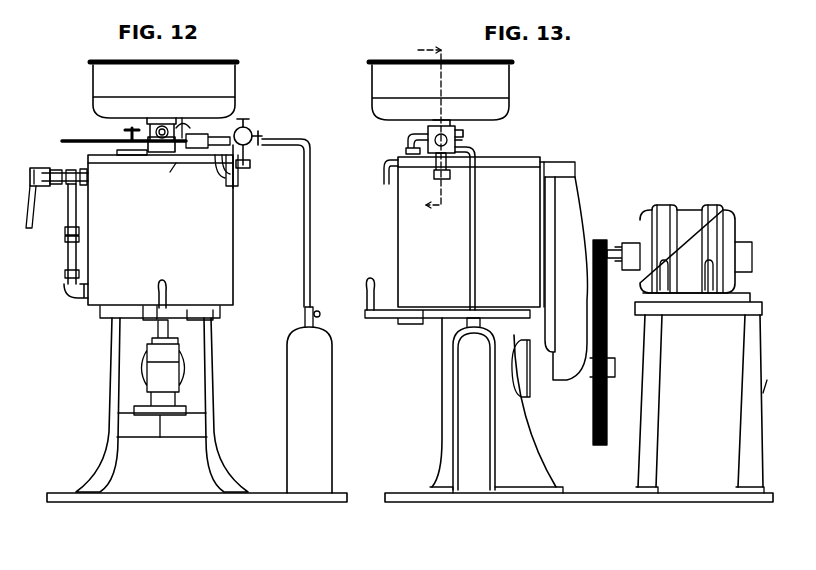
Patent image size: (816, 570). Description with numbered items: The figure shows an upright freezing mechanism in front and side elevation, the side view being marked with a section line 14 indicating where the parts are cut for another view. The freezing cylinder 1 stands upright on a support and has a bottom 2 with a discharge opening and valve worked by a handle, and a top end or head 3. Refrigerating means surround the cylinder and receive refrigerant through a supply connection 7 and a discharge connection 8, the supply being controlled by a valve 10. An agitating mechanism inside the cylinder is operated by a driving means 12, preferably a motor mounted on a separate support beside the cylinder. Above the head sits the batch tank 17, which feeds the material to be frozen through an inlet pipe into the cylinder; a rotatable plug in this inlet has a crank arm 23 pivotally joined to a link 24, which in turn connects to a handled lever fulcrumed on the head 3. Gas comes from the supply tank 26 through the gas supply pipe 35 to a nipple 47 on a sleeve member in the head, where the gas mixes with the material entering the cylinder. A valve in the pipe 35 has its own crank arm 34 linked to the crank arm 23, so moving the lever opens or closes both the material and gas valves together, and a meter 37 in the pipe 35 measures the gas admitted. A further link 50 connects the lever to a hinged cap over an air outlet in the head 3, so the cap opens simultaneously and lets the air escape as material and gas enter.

In FIG. 12, the freezing cylinder 1 is at (168, 232).
In FIG. 13, the freezing cylinder 1 is at (503, 222).
In FIG. 12, the bottom 2 is at (168, 297).
In FIG. 13, the bottom 2 is at (428, 345).
In FIG. 12, the top end or head 3 is at (146, 167).
In FIG. 13, the top end or head 3 is at (402, 158).
In FIG. 12, the supply connection 7 is at (89, 292).
In FIG. 12, the discharge connection 8 is at (89, 180).
In FIG. 12, the valve 10 is at (48, 170).
In FIG. 13, the driving means 12 is at (592, 448).
In FIG. 13, the section line 14 is at (437, 130).
In FIG. 12, the batch tank 17 is at (238, 80).
In FIG. 13, the batch tank 17 is at (372, 87).
In FIG. 12, the crank arm 23 is at (161, 119).
In FIG. 13, the crank arm 23 is at (427, 125).
In FIG. 12, the link 24 is at (233, 187).
In FIG. 13, the link 24 is at (371, 174).
In FIG. 12, the supply tank 26 is at (322, 448).
In FIG. 13, the supply tank 26 is at (460, 400).
In FIG. 12, the crank arm 34 is at (267, 133).
In FIG. 13, the crank arm 34 is at (434, 174).
In FIG. 12, the gas supply pipe 35 is at (305, 294).
In FIG. 13, the gas supply pipe 35 is at (476, 282).
In FIG. 12, the meter 37 is at (243, 129).
In FIG. 13, the meter 37 is at (463, 138).
In FIG. 12, the nipple 47 is at (188, 127).
In FIG. 12, the link 50 is at (181, 177).